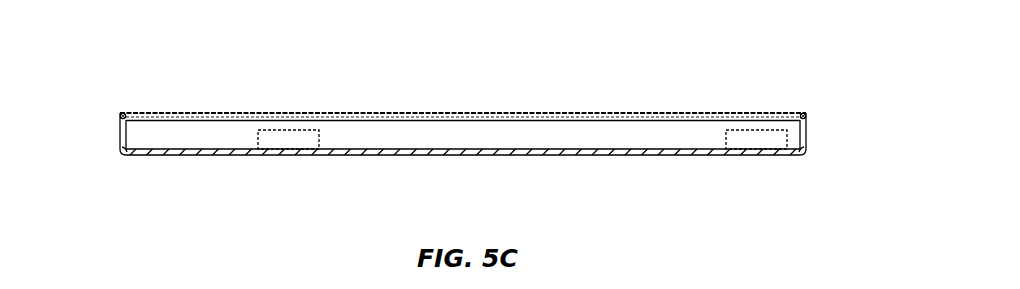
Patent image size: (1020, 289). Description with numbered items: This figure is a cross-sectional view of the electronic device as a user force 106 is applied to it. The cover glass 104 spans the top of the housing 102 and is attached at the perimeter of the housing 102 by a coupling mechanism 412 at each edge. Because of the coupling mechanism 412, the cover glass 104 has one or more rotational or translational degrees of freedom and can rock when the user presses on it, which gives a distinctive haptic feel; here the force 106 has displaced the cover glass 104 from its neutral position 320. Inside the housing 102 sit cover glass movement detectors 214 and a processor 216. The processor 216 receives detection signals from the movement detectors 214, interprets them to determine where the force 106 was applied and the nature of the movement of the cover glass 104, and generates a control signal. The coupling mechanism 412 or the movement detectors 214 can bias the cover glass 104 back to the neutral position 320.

The housing 102 is at (118, 152).
The cover glass 104 is at (262, 118).
The force 106 is at (759, 111).
The cover glass movement detector 214 is at (748, 142).
The processor 216 is at (282, 145).
The neutral position 320 is at (720, 112).
The coupling mechanism 412 is at (121, 113).